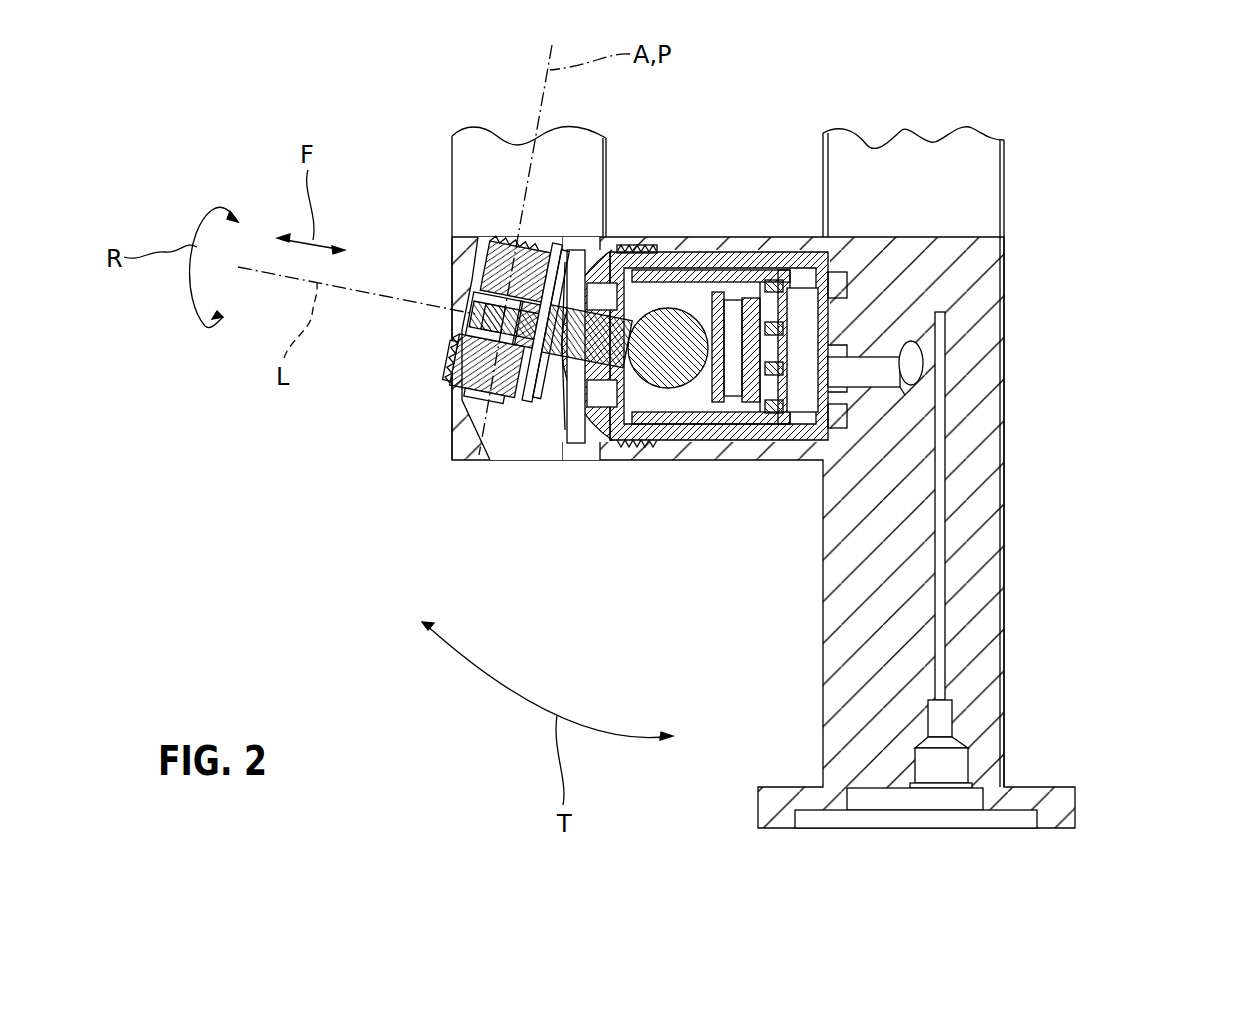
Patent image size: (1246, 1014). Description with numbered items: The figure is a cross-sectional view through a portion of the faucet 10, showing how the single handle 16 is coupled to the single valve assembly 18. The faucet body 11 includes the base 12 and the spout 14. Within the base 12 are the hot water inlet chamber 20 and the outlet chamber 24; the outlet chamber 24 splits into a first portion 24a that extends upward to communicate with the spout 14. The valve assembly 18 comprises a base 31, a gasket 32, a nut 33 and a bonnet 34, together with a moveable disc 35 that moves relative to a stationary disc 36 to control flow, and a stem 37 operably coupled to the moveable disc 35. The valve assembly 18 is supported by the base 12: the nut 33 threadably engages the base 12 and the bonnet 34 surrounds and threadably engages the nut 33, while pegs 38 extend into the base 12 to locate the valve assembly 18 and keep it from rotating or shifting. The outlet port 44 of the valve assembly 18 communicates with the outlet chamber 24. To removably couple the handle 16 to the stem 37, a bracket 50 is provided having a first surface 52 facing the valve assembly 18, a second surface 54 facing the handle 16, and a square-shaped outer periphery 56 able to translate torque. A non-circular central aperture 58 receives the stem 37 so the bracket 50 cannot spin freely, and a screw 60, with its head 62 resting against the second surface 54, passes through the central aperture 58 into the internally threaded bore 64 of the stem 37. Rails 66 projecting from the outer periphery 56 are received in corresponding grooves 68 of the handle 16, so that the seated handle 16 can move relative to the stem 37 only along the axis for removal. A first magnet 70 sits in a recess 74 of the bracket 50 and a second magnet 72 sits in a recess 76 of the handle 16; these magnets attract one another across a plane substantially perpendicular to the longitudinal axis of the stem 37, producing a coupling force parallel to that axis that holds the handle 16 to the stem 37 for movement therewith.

The faucet 10 is at (1125, 125).
The body 11 is at (1007, 540).
The base 12 is at (990, 645).
The spout 14 is at (1003, 158).
The handle 16 is at (472, 137).
The valve assembly 18 is at (562, 546).
The hot water inlet chamber 20 is at (942, 758).
The outlet chamber 24 is at (866, 379).
The first portion of outlet chamber 24a is at (913, 360).
The base of valve assembly 31 is at (768, 272).
The gasket 32 is at (752, 268).
The nut 33 is at (635, 250).
The bonnet 34 is at (622, 255).
The moveable disc 35 is at (727, 448).
The stationary disc 36 is at (765, 445).
The stem 37 is at (672, 440).
The pegs 38 is at (842, 285).
The outlet port 44 is at (833, 368).
The bracket 50 is at (522, 430).
The first surface 52 is at (535, 440).
The second surface 54 is at (456, 462).
The outer periphery 56 is at (494, 450).
The central aperture 58 is at (495, 320).
The screw 60 is at (565, 440).
The head 62 is at (477, 292).
The internally threaded bore 64 is at (622, 445).
The rails 66 is at (540, 250).
The grooves 68 is at (503, 248).
The first magnet 70 is at (468, 360).
The second magnet 72 is at (468, 378).
The recess of bracket 74 is at (605, 245).
The recess of handle 76 is at (472, 405).